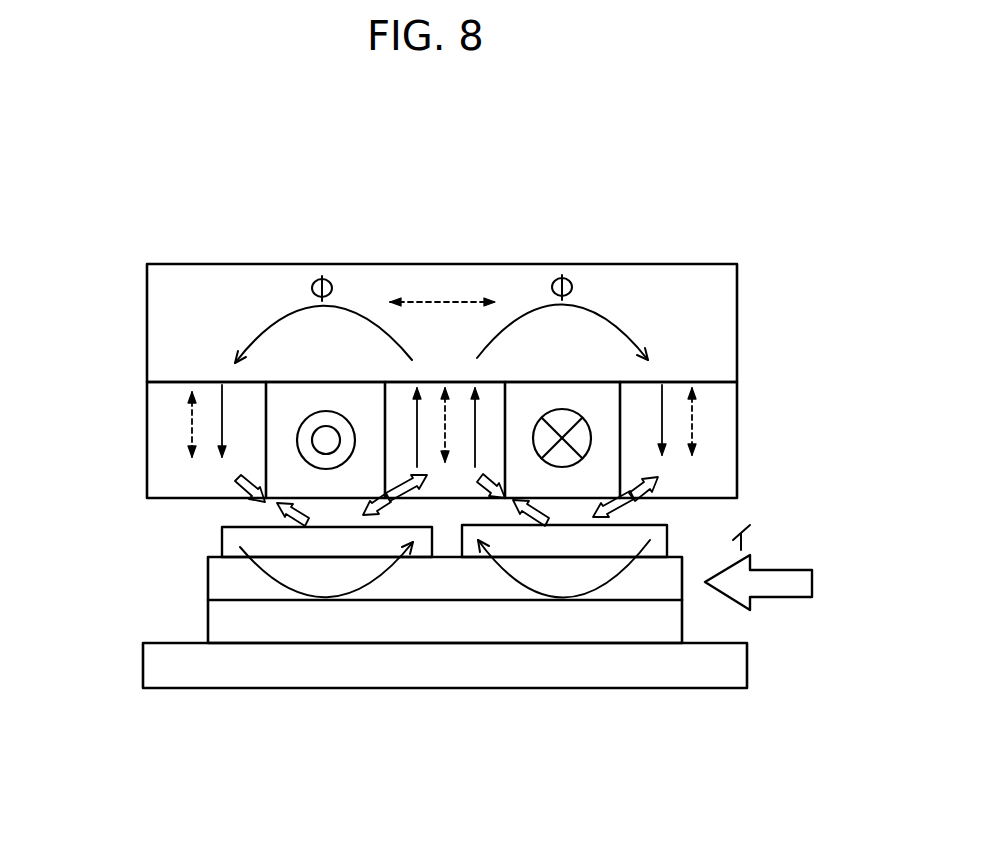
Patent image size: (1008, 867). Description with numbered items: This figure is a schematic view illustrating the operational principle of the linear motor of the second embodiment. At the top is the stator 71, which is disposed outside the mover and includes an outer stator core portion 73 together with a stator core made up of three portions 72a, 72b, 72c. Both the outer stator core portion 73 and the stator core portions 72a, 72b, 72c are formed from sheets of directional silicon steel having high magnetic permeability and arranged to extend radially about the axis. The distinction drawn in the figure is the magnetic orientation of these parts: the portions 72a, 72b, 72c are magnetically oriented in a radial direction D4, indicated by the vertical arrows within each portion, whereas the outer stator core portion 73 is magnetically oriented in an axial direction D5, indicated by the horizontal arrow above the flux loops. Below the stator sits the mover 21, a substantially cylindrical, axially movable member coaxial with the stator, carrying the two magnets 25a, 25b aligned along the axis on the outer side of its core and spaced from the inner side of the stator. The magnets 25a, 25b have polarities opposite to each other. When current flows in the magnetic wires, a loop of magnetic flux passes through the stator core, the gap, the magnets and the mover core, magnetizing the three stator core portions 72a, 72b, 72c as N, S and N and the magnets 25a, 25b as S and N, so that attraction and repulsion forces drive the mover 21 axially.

The outer stator core portion 73 is at (710, 298).
The stator 71 is at (702, 358).
The portion of stator core 72a is at (192, 468).
The portion of stator core 72b is at (437, 499).
The portion of stator core 72c is at (705, 458).
The magnet 25a is at (295, 540).
The magnet 25b is at (595, 538).
The mover 21 is at (447, 613).
The radial direction D4 is at (192, 422).
The axial direction D5 is at (447, 300).